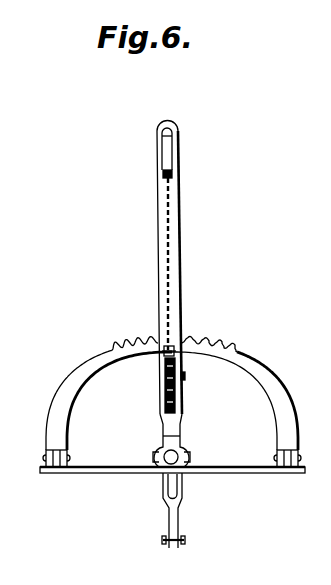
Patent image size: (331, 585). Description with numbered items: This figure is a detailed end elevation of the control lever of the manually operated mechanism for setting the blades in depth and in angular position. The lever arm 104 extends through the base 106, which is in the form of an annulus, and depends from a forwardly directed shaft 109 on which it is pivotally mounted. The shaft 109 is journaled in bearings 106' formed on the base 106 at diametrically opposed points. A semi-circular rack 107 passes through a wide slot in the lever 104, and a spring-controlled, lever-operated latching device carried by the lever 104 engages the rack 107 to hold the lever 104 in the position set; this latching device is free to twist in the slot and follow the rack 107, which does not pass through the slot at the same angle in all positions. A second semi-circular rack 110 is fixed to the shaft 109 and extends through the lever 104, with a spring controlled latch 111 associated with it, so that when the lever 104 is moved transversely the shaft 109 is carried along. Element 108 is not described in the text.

The lever arm 104 is at (180, 192).
The inner rod 108 is at (181, 219).
The spring controlled latch 111 is at (183, 350).
The semi-circular rack 110 is at (162, 378).
The semi-circular rack 107 is at (238, 357).
The bearings 106' is at (203, 440).
The shaft 109 is at (162, 466).
The base 106 is at (172, 494).